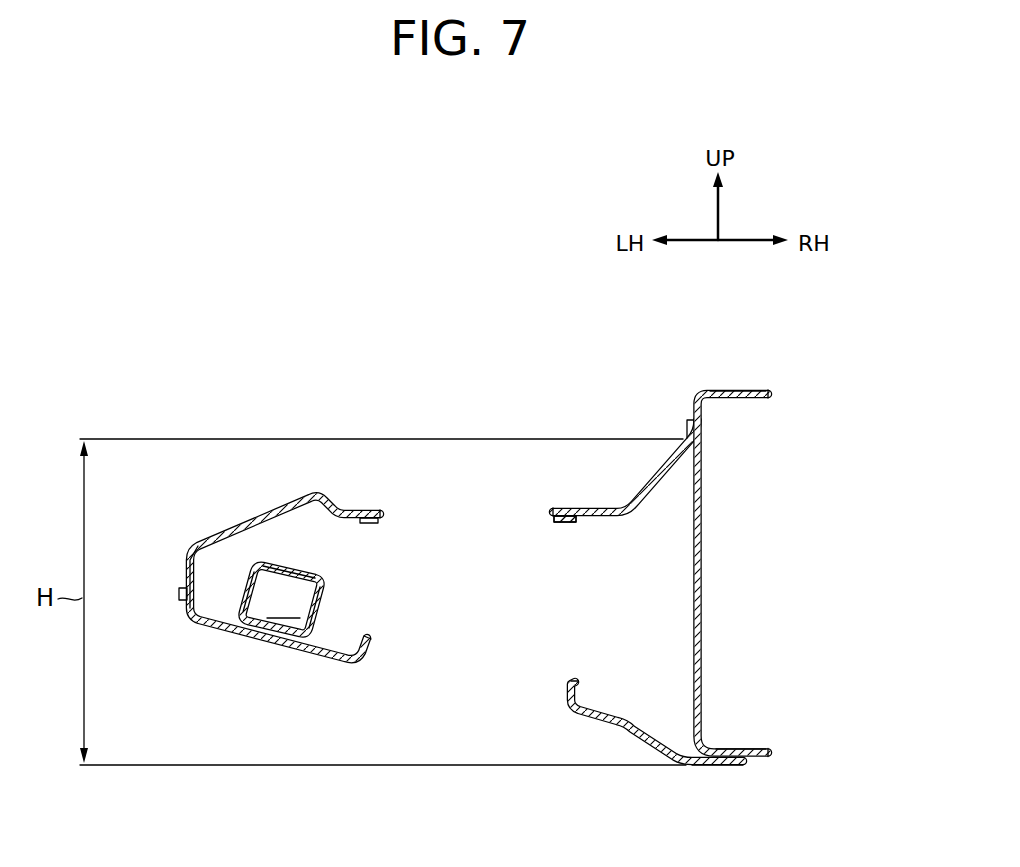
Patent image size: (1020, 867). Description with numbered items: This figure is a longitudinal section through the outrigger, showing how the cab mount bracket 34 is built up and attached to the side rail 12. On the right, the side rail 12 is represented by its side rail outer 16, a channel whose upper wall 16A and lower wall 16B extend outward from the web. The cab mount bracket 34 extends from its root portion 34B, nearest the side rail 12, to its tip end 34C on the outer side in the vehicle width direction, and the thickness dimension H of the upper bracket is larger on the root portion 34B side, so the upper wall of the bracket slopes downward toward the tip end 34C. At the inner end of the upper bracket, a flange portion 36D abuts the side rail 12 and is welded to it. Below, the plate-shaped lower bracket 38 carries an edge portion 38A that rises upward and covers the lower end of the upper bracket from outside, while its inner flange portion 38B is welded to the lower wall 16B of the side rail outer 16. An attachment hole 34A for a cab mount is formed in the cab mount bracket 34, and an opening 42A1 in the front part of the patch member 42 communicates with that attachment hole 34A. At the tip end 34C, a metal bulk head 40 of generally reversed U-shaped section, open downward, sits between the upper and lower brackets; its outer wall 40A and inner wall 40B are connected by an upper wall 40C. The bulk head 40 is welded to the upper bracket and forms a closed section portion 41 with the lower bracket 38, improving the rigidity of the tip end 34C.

The side rail 12 is at (745, 531).
The side rail outer 16 is at (757, 388).
The upper wall of side rail outer 16A is at (748, 400).
The lower wall of side rail outer 16B is at (740, 752).
The cab mount bracket 34 is at (241, 554).
The attachment hole 34A is at (553, 510).
The root portion 34B is at (660, 425).
The tip end 34C is at (182, 546).
The flange portion 36D is at (686, 428).
The lower bracket 38 is at (618, 727).
The edge portion 38A is at (179, 597).
The inner flange portion 38B is at (728, 764).
The bulk head 40 is at (313, 623).
The outer wall of bulk head 40A is at (243, 600).
The inner wall of bulk head 40B is at (330, 628).
The upper wall of bulk head 40C is at (289, 564).
The closed section portion 41 is at (283, 604).
The patch member 42 is at (575, 525).
The opening 42A1 is at (556, 521).